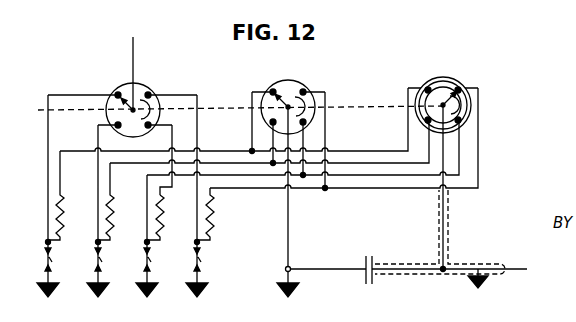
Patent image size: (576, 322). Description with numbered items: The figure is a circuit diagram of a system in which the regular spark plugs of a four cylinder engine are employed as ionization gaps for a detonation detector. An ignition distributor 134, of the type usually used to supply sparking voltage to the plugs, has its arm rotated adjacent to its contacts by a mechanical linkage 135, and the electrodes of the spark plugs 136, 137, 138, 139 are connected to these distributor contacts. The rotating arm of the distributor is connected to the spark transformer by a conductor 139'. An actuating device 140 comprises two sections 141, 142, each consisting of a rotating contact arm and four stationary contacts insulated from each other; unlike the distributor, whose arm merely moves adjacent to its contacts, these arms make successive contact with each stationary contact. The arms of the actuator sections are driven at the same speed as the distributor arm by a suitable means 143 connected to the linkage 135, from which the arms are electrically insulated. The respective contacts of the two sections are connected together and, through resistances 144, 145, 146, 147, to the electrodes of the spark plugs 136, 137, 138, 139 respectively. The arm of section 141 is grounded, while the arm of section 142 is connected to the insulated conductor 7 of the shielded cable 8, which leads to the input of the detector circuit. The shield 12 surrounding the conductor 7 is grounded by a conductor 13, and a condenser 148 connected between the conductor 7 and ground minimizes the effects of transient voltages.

The ignition distributor 134 is at (147, 80).
The conductor 139' is at (159, 69).
The mechanical linkage 135 is at (37, 110).
The driving means 143 is at (228, 106).
The actuator section 141 is at (301, 82).
The actuator section 142 is at (457, 84).
The actuating device 140 is at (411, 79).
The resistance 144 is at (63, 200).
The resistance 145 is at (113, 210).
The resistance 146 is at (163, 220).
The resistance 147 is at (214, 219).
The spark plug 136 is at (52, 262).
The spark plug 137 is at (102, 262).
The spark plug 138 is at (151, 262).
The spark plug 139 is at (211, 269).
The condenser 148 is at (366, 256).
The shield 12 is at (412, 262).
The insulated conductor 7 is at (517, 266).
The shielded cable 8 is at (487, 252).
The conductor 13 is at (470, 279).